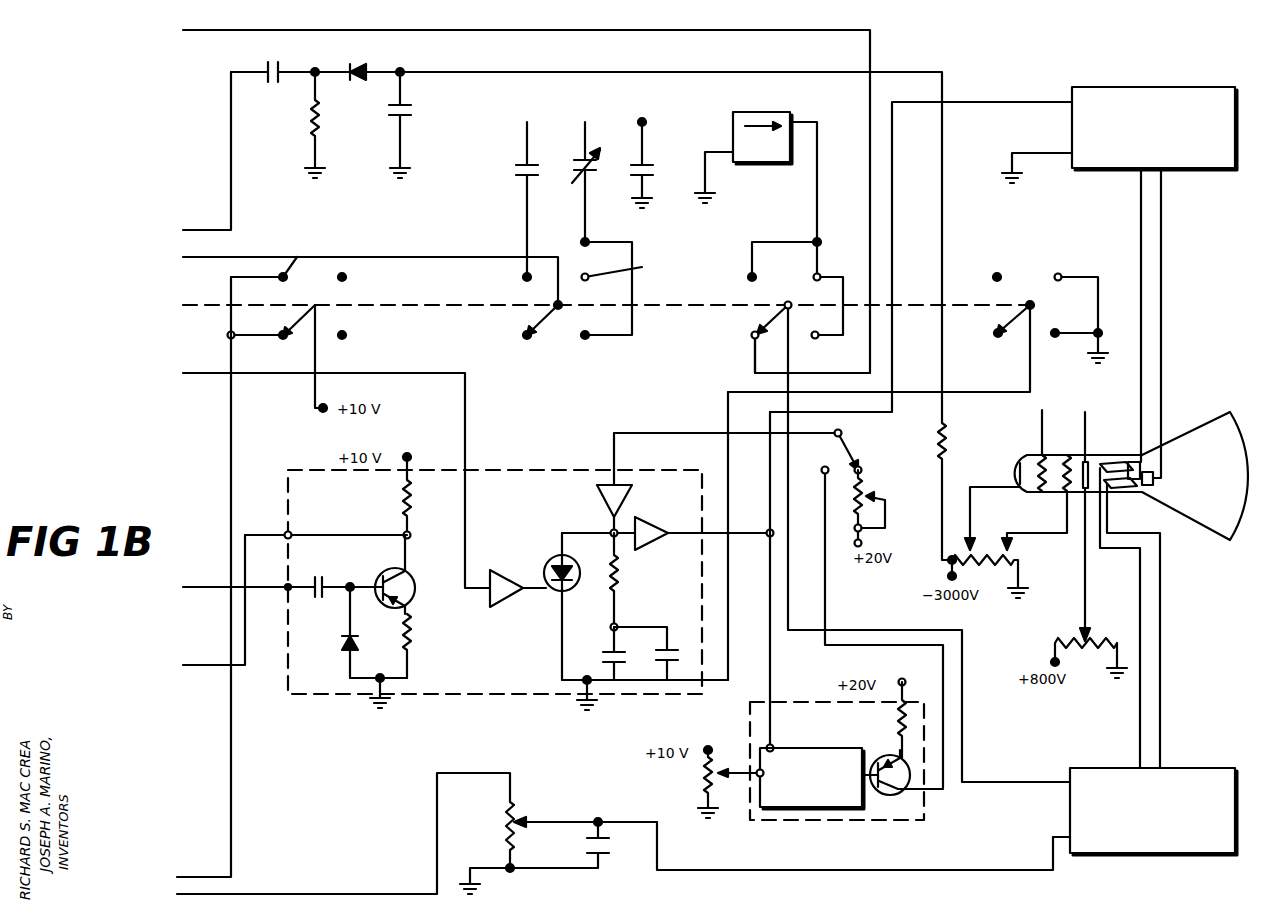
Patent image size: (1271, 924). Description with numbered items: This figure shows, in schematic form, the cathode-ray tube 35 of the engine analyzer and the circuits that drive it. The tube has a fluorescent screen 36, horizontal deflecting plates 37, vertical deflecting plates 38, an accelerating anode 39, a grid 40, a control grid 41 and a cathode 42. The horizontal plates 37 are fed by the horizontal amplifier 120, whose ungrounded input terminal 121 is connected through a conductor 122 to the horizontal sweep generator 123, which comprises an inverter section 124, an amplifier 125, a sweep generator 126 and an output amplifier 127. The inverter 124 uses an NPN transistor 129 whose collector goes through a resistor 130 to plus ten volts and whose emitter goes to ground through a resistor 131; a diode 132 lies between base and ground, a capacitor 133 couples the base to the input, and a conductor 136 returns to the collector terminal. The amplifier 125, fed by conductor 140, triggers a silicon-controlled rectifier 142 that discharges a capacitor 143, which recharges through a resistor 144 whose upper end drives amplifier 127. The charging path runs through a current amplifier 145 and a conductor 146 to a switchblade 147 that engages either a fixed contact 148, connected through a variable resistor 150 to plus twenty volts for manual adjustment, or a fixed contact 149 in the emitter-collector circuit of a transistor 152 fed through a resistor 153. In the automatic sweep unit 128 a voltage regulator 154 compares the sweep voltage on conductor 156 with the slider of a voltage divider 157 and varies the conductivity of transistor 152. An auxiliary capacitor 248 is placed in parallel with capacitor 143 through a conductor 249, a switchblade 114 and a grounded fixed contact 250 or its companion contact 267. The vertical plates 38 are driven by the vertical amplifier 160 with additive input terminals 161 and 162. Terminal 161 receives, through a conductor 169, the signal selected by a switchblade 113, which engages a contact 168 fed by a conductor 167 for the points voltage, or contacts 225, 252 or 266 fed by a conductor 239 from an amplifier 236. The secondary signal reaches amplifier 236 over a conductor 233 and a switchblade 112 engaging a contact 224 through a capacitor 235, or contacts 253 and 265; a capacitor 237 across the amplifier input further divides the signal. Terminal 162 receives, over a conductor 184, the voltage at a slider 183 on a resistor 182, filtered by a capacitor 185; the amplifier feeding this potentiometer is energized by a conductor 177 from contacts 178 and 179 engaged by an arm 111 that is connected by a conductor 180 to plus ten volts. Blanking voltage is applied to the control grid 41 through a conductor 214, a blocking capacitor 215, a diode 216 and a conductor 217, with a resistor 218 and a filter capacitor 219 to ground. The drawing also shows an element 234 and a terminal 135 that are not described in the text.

The conductor 167 is at (192, 32).
The diode 216 is at (358, 64).
The conductor 217 is at (580, 70).
The blocking capacitor 215 is at (268, 84).
The resistor 218 is at (318, 140).
The capacitor 219 is at (407, 113).
The conductor 214 is at (230, 198).
The amplifier 236 is at (762, 112).
The capacitor 237 is at (654, 164).
The capacitor 235 is at (513, 173).
The variable capacitor 234 is at (572, 175).
The conductor 239 is at (815, 200).
The horizontal amplifier 120 is at (1128, 85).
The ungrounded input terminal 121 is at (1067, 101).
The conductor 122 is at (957, 105).
The switch contact 179 is at (282, 255).
The conductor 233 is at (472, 254).
The fixed contact 253 is at (634, 286).
The fixed contact 224 is at (494, 209).
The fixed contact 225 is at (755, 266).
The fixed contact 252 is at (820, 276).
The fixed contact 250 is at (1060, 275).
The switch contact 178 is at (258, 326).
The switchblade 111 is at (301, 322).
The switchblade 112 is at (557, 308).
The fixed contact 265 is at (595, 338).
The switchblade 113 is at (762, 320).
The fixed contact 266 is at (814, 335).
The contact 168 is at (750, 340).
The conductor 169 is at (793, 362).
The switchblade 114 is at (1022, 312).
The fixed contact 267 is at (1073, 351).
The conductor 140 is at (205, 375).
The conductor 180 is at (312, 388).
The horizontal sweep generator 123 is at (533, 462).
The conductor 146 is at (665, 430).
The conductor 249 is at (726, 462).
The fixed contact 149 is at (822, 468).
The switchblade 147 is at (845, 444).
The fixed contact 148 is at (861, 472).
The variable resistor 150 is at (928, 497).
The accelerating anode 39 is at (1076, 514).
The vertical deflecting plates 38 is at (1116, 462).
The cathode 42 is at (1003, 467).
The grid 40 is at (1063, 464).
The control grid 41 is at (1042, 492).
The horizontal deflecting plates 37 is at (1139, 490).
The fluorescent screen 36 is at (1233, 412).
The cathode-ray tube 35 is at (1195, 548).
The terminal 135 is at (287, 532).
The resistor 130 is at (399, 510).
The current amplifier 145 is at (606, 492).
The output amplifier 127 is at (665, 512).
The amplifier 125 is at (500, 568).
The capacitor 133 is at (320, 578).
The NPN transistor 129 is at (413, 596).
The silicon-controlled rectifier 142 is at (558, 588).
The resistor 144 is at (620, 572).
The capacitor 143 is at (648, 622).
The diode 132 is at (340, 635).
The resistor 131 is at (412, 645).
The auxiliary capacitor 248 is at (655, 655).
The conductor 136 is at (205, 672).
The sweep generator 126 is at (547, 676).
The inverter section 124 is at (336, 697).
The conductor 156 is at (771, 660).
The resistor 153 is at (898, 726).
The transistor 152 is at (896, 794).
The voltage regulator 154 is at (800, 810).
The automatic sweep unit 128 is at (862, 824).
The voltage divider 157 is at (689, 792).
The slider 183 is at (523, 819).
The resistor 182 is at (506, 833).
The capacitor 185 is at (615, 838).
The conductor 177 is at (228, 837).
The conductor 184 is at (1026, 871).
The input terminal 162 is at (1065, 840).
The vertical amplifier 160 is at (1163, 853).
The input terminal 161 is at (1065, 787).